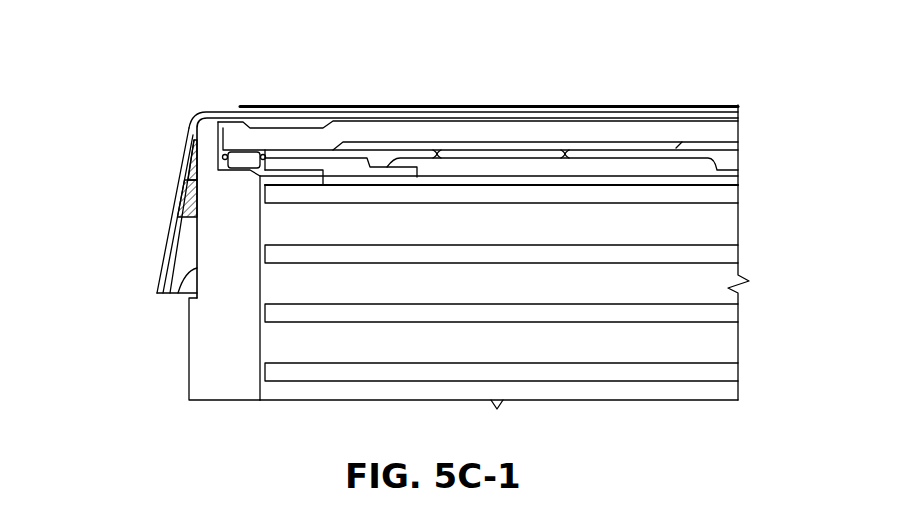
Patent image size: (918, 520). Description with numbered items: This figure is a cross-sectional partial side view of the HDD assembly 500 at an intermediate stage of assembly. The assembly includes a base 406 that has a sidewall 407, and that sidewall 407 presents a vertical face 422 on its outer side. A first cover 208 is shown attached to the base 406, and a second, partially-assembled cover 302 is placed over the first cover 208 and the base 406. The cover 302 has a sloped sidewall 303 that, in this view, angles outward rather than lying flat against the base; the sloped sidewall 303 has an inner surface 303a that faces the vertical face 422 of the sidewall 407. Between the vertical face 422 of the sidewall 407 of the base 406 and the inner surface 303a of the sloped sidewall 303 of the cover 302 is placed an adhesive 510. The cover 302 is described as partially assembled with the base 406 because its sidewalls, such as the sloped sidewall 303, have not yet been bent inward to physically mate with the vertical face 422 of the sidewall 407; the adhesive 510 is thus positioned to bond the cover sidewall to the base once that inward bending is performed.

The HDD assembly 500 is at (591, 80).
The cover 302 is at (214, 106).
The sloped sidewall 303 is at (172, 206).
The inner surface 303a is at (170, 266).
The adhesive 510 is at (182, 193).
The vertical face 422 is at (180, 300).
The sidewall 407 is at (210, 348).
The base 406 is at (475, 292).
The first cover 208 is at (727, 131).